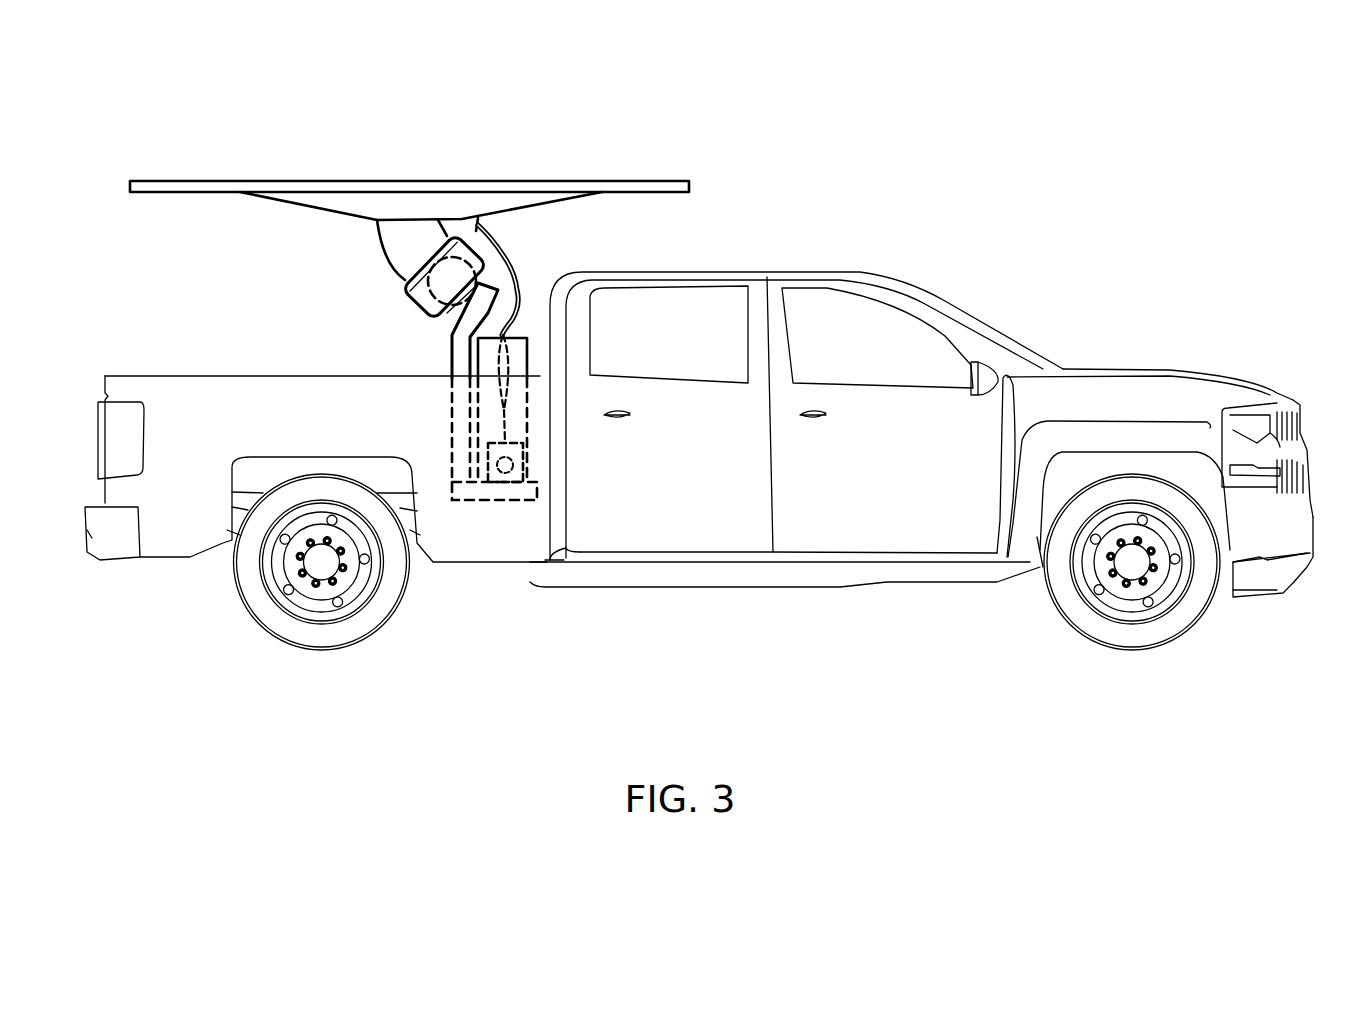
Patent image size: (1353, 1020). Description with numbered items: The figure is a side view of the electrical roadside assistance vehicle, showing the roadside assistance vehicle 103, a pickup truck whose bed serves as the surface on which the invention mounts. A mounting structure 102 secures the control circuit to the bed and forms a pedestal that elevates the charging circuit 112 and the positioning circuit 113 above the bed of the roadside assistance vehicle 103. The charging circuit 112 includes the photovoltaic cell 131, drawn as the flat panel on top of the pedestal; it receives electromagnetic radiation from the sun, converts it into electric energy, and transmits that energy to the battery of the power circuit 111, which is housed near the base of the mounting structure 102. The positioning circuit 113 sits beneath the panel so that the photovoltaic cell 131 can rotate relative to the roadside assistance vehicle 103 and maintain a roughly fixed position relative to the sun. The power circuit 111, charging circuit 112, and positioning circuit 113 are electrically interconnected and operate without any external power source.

The roadside assistance vehicle 103 is at (1117, 369).
The charging circuit 112 is at (637, 148).
The photovoltaic cell 131 is at (452, 190).
The positioning circuit 113 is at (403, 297).
The mounting structure 102 is at (450, 360).
The power circuit 111 is at (513, 483).